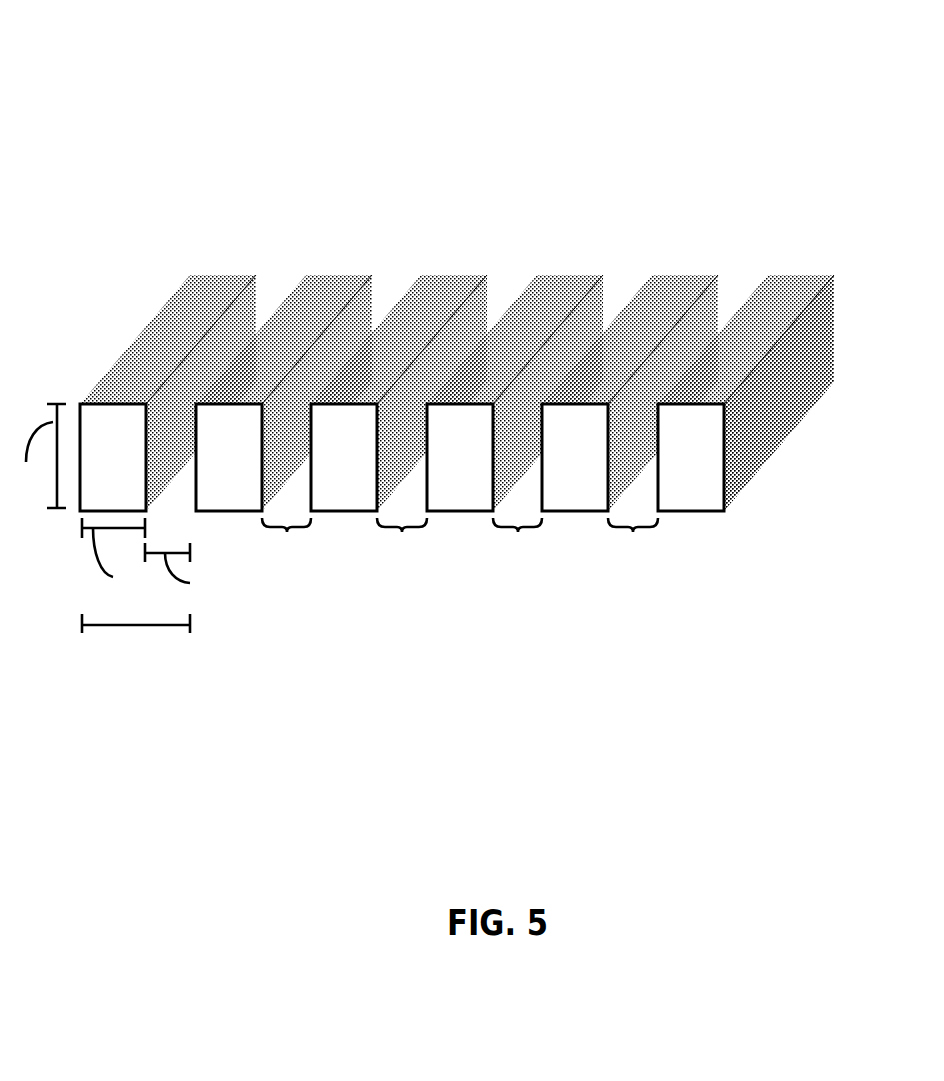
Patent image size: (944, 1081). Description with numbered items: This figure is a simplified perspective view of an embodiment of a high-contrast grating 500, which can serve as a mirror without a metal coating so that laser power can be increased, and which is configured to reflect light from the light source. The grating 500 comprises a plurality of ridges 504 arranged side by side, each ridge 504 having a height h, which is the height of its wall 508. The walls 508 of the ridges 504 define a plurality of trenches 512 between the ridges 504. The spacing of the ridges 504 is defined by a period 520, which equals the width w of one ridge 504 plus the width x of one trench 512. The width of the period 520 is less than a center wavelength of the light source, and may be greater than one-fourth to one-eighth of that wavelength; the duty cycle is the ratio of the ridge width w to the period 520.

The grating 500 is at (139, 48).
The ridges 504 is at (194, 308).
The walls 508 is at (778, 415).
The trenches 512 is at (287, 532).
The period 520 is at (128, 625).